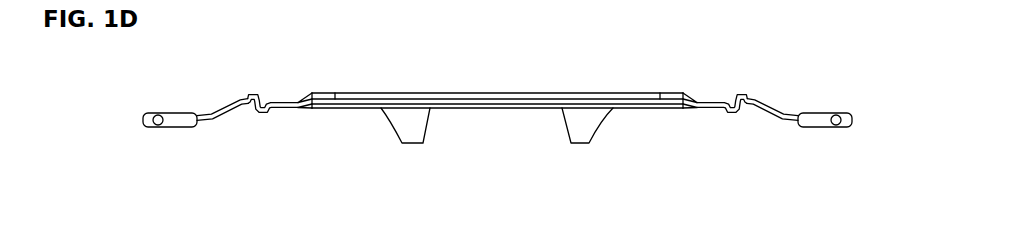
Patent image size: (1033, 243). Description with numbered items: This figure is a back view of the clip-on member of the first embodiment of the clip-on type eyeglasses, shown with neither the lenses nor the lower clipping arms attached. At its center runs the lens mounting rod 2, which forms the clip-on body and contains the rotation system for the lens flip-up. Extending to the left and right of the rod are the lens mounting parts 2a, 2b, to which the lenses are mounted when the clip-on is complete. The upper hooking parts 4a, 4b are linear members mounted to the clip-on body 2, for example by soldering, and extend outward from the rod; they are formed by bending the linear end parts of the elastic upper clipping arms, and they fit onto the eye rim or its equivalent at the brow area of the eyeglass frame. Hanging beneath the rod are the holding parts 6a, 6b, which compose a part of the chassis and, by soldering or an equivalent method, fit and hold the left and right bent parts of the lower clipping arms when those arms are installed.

The lens mounting rod 2 is at (501, 94).
The lens mounting part 2a is at (221, 117).
The lens mounting part 2b is at (778, 117).
The upper hooking part 4a is at (268, 113).
The upper hooking part 4b is at (732, 112).
The holding part 6a is at (410, 140).
The holding part 6b is at (575, 140).